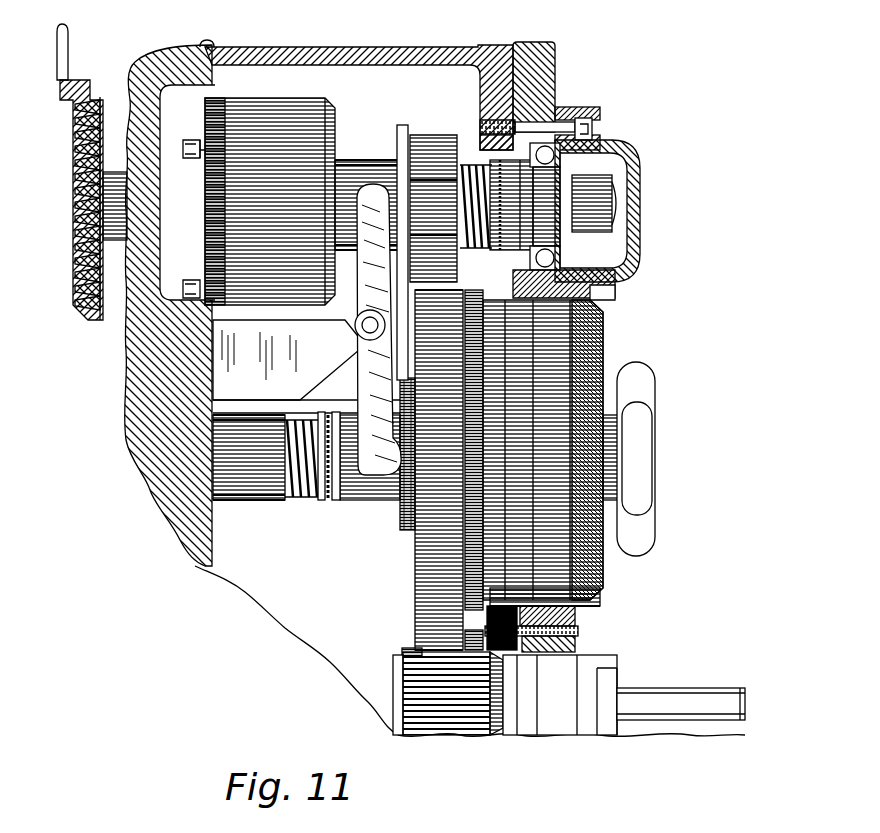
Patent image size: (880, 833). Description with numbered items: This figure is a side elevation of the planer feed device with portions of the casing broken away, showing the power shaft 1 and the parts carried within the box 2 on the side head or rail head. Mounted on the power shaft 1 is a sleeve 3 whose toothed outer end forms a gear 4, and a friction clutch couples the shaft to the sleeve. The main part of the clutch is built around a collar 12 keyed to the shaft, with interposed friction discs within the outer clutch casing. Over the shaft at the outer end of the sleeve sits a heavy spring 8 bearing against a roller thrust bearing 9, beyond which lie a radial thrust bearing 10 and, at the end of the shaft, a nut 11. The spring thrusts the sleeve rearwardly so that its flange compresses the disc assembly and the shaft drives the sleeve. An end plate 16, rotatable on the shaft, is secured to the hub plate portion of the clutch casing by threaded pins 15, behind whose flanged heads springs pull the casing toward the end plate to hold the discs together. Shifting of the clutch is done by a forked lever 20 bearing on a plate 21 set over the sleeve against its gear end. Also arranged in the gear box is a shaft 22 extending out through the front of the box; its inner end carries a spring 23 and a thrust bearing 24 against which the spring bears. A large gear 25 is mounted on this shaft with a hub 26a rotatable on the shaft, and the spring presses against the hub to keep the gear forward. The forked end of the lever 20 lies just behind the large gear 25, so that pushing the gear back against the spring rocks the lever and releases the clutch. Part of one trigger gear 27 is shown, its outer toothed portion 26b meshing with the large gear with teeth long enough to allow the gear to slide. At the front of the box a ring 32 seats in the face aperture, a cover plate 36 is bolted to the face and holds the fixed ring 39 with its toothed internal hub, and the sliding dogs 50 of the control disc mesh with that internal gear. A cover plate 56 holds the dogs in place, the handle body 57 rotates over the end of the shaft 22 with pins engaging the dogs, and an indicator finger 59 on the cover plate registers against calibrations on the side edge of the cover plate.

The power shaft 1 is at (122, 182).
The box 2 is at (368, 48).
The sleeve 3 is at (353, 162).
The gear 4 is at (425, 137).
The heavy spring 8 is at (468, 168).
The roller thrust bearing 9 is at (545, 138).
The radial thrust bearing 10 is at (590, 132).
The nut 11 is at (598, 185).
The collar 12 is at (285, 95).
The threaded pins 15 is at (190, 300).
The end plate 16 is at (204, 104).
The forked lever 20 is at (378, 455).
The plate 21 is at (399, 127).
The shaft 22 is at (288, 501).
The spring 23 is at (301, 498).
The thrust bearing 24 is at (325, 501).
The large gear 25 is at (415, 607).
The hub 26a is at (390, 500).
The outer toothed portions 26b is at (410, 650).
The pinion 27 is at (462, 715).
The ring 32 is at (473, 470).
The cover plate 36 is at (558, 72).
The fixed ring 39 is at (600, 288).
The sliding dogs 50 is at (590, 312).
The cover plate 56 is at (600, 596).
The handle body 57 is at (655, 395).
The indicator finger 59 is at (575, 612).